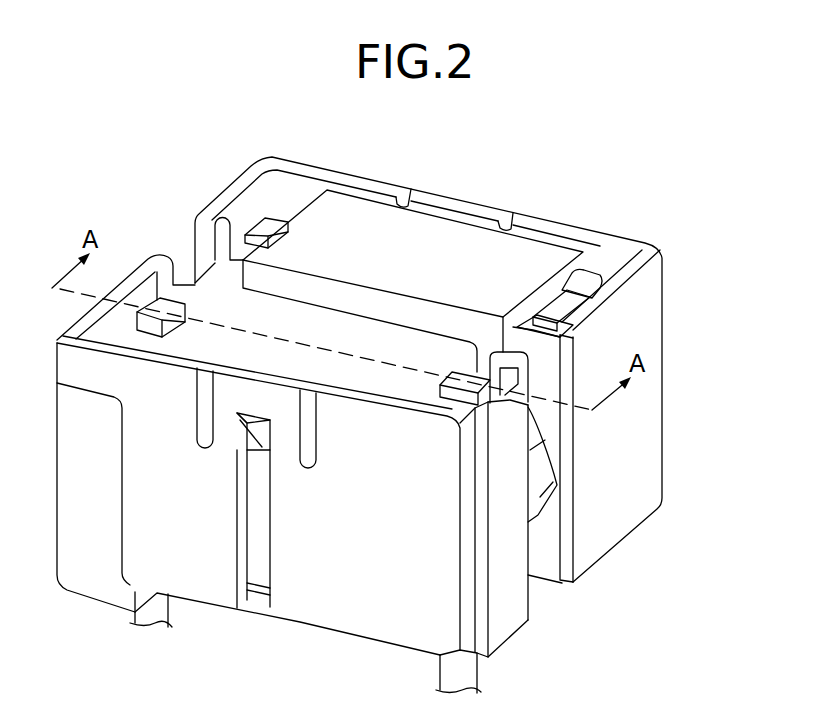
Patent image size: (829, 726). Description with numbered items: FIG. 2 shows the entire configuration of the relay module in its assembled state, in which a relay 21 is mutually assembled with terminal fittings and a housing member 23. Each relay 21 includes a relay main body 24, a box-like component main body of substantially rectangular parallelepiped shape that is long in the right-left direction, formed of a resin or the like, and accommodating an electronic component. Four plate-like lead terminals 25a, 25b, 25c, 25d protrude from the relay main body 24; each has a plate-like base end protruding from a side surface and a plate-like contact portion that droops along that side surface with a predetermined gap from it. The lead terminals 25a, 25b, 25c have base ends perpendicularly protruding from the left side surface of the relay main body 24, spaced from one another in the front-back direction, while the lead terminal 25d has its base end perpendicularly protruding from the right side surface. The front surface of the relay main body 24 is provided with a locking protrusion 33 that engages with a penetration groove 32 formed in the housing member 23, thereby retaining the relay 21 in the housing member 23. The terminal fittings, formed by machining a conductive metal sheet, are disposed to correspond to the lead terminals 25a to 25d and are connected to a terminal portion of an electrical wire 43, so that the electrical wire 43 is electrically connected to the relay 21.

The relay 21 is at (342, 219).
The housing member 23 is at (602, 228).
The relay main body 24 is at (455, 250).
The lead terminal 25a is at (605, 244).
The lead terminal 25b is at (572, 302).
The lead terminal 25c is at (545, 326).
The lead terminal 25d is at (270, 217).
The penetration groove 32 is at (270, 533).
The locking protrusion 33 is at (240, 430).
The electrical wire 43 is at (478, 671).